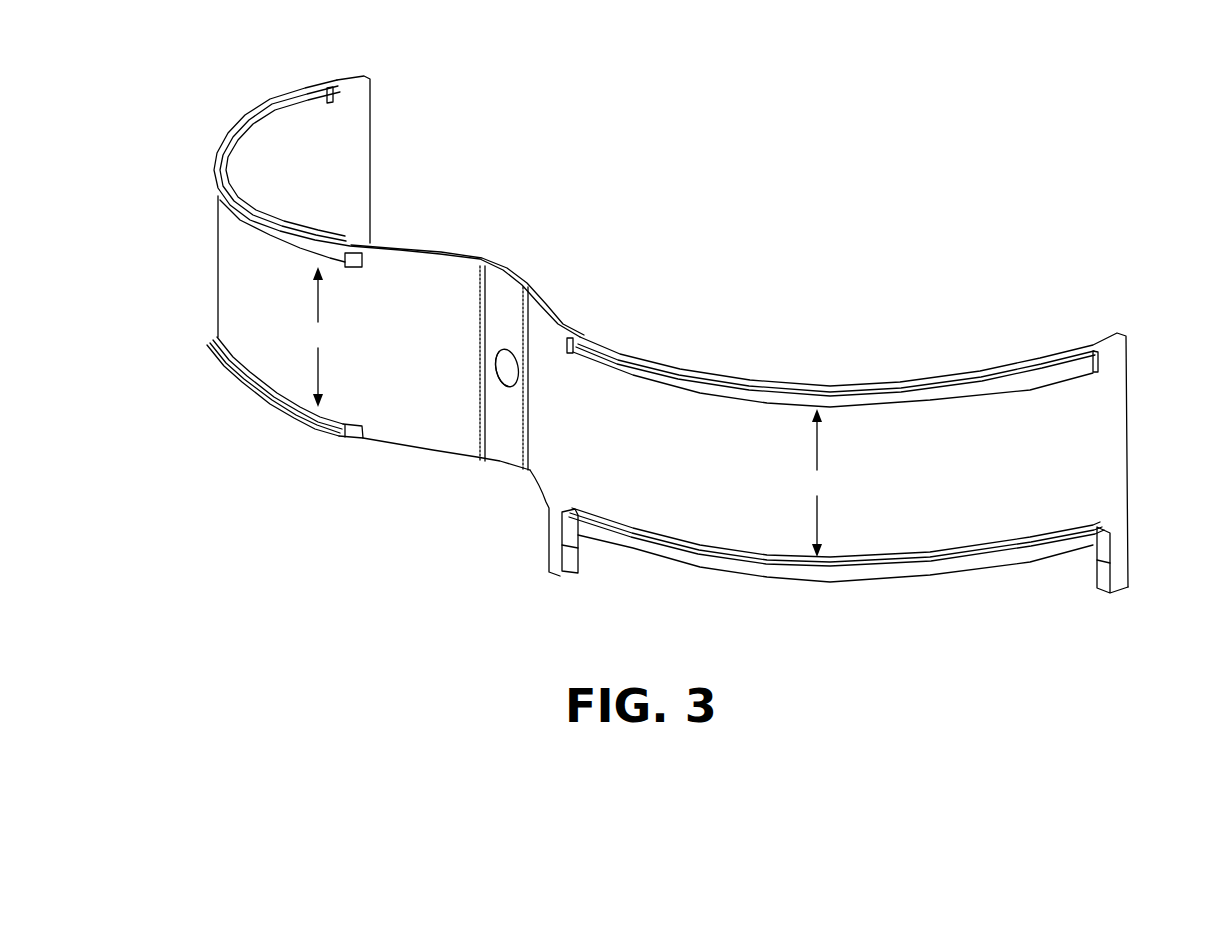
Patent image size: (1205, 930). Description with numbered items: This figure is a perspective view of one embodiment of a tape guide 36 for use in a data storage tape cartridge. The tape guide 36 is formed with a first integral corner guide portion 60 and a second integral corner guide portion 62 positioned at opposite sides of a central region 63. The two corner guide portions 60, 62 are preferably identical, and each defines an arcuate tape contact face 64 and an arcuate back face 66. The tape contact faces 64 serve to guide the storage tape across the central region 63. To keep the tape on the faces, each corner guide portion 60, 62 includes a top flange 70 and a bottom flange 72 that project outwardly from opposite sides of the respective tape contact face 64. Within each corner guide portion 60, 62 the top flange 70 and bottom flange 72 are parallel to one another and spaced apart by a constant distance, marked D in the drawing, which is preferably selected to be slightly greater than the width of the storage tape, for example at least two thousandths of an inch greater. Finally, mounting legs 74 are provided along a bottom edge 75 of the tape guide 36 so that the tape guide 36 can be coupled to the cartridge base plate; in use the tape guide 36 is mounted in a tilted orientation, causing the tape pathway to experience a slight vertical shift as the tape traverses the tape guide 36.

The tape guide 36 is at (750, 166).
The first integral corner guide portion 60 is at (335, 70).
The second integral corner guide portion 62 is at (1098, 419).
The central region 63 is at (490, 473).
The arcuate tape contact face 64 is at (277, 362).
The arcuate back face 66 is at (343, 146).
The top flange 70 is at (216, 194).
The bottom flange 72 is at (310, 420).
The mounting legs 74 is at (551, 557).
The bottom edge 75 is at (845, 585).